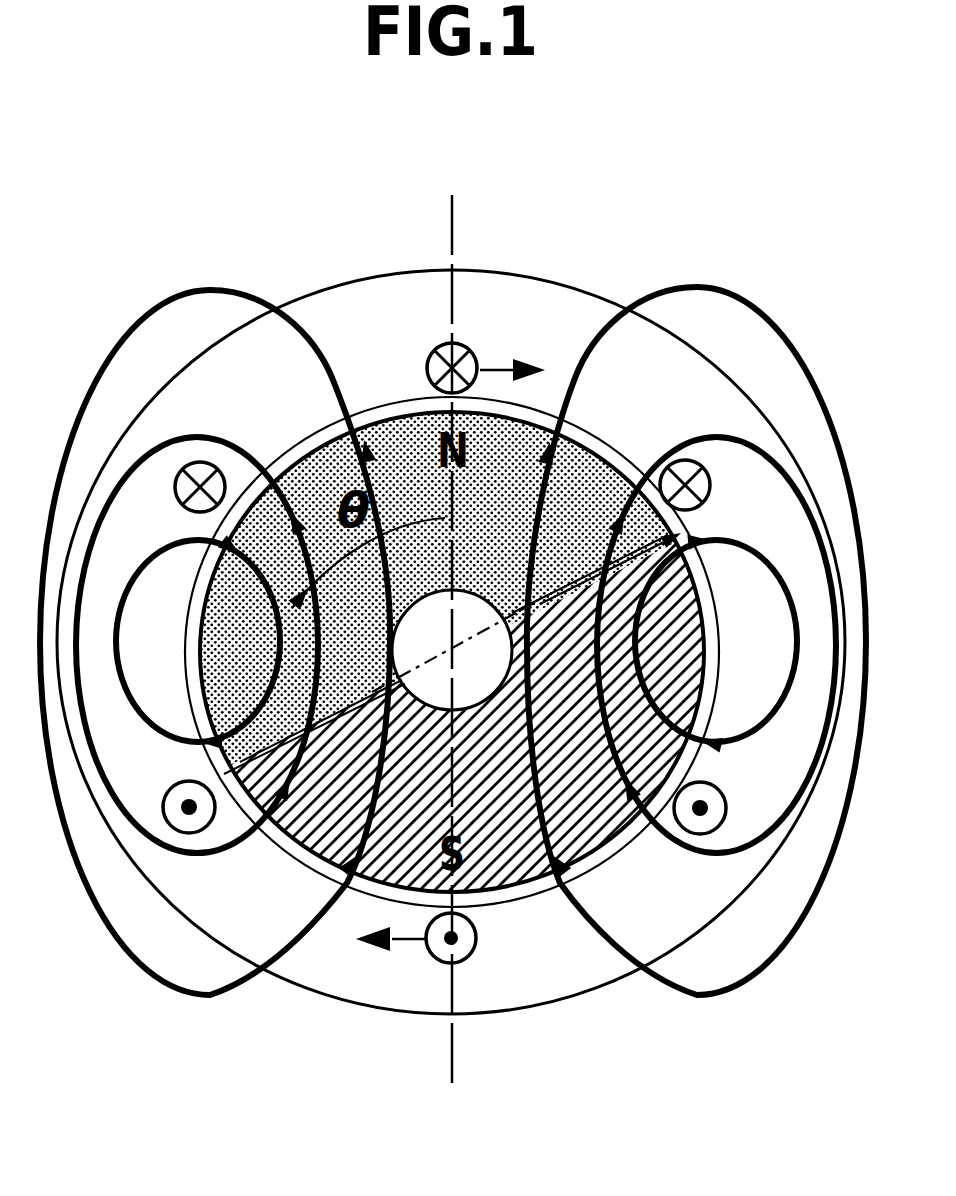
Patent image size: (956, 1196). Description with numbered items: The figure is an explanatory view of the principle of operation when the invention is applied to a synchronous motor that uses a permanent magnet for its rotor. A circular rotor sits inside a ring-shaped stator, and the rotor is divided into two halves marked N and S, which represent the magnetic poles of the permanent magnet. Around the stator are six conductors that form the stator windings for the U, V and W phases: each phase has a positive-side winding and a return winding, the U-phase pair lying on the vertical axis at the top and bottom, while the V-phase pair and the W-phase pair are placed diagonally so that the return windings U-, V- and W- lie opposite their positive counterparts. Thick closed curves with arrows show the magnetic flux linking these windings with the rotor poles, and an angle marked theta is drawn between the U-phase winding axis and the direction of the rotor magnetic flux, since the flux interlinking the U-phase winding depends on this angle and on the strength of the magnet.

The U-phase stator winding (negative side) U- is at (453, 952).
The V-phase stator winding (negative side) V- is at (716, 645).
The W-phase stator winding (negative side) W- is at (197, 645).